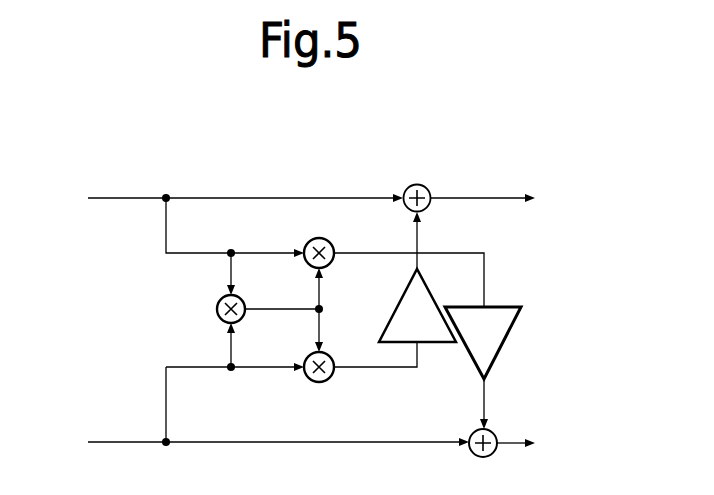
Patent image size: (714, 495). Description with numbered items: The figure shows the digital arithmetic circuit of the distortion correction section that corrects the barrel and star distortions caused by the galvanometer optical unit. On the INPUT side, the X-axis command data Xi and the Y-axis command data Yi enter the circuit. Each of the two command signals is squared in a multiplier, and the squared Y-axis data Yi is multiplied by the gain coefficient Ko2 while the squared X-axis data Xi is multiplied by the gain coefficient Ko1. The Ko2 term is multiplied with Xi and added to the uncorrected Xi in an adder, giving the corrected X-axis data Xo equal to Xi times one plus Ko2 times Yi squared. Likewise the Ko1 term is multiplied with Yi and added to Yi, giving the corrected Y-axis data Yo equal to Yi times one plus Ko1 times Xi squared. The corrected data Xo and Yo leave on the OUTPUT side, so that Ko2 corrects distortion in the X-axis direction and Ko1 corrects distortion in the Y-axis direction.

The X-axis command data Xi is at (228, 196).
The X-axis corrected data Xo is at (493, 198).
The Y-axis command data Yi is at (261, 441).
The Y-axis corrected data Yo is at (516, 443).
The gain coefficient Ko1 is at (427, 341).
The gain coefficient Ko2 is at (395, 289).
The input side INPUT is at (95, 320).
The output side OUTPUT is at (541, 320).